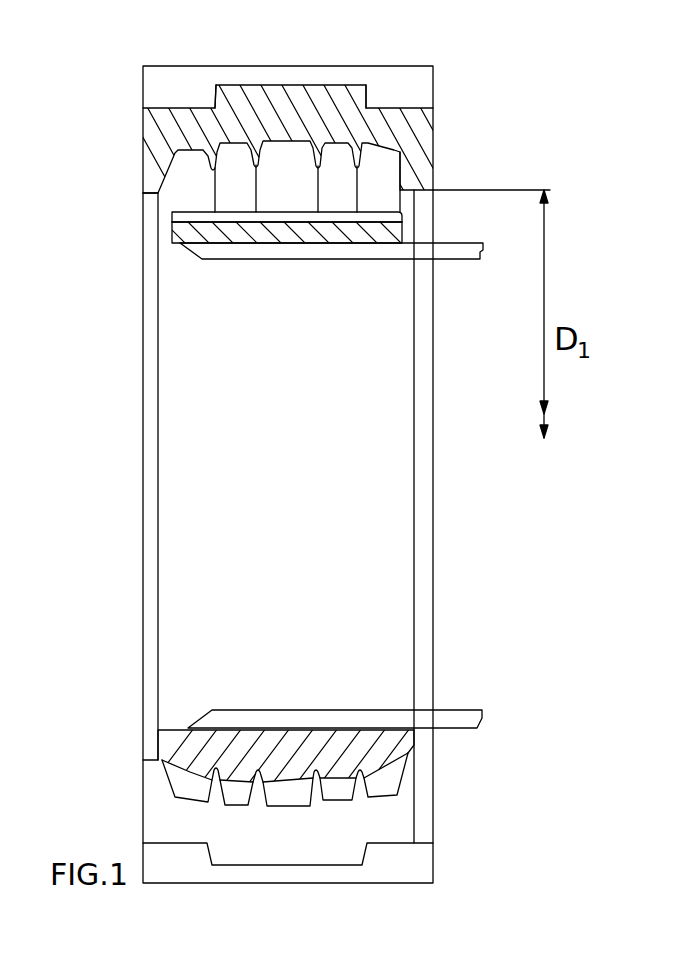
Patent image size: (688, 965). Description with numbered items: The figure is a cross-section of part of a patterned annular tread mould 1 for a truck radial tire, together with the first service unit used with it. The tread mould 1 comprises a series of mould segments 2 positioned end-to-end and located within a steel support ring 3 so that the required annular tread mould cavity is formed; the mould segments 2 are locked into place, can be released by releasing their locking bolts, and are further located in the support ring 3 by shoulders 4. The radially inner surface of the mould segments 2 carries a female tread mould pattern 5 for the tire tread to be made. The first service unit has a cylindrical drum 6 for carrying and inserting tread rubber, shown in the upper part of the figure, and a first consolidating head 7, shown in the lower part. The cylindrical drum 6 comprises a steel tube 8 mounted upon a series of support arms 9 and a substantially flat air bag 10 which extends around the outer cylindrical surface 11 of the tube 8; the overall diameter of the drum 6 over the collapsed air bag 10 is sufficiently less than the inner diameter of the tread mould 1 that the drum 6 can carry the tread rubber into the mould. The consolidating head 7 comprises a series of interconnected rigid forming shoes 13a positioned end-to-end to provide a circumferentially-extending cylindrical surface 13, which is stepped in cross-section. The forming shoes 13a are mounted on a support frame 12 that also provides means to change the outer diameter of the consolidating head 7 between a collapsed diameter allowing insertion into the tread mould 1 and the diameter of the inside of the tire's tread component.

The tread mould 1 is at (135, 145).
The mould segments 2 is at (147, 176).
The support ring 3 is at (420, 86).
The shoulders 4 is at (215, 90).
The female tread mould pattern 5 is at (317, 158).
The cylindrical drum 6 is at (287, 171).
The first consolidating head 7 is at (305, 739).
The steel tube 8 is at (388, 235).
The support arms 9 is at (453, 258).
The air bag 10 is at (372, 212).
The outer cylindrical surface 11 is at (226, 222).
The support frame 12 is at (440, 712).
The cylindrical surface 13 is at (268, 783).
The forming shoes 13a is at (390, 744).